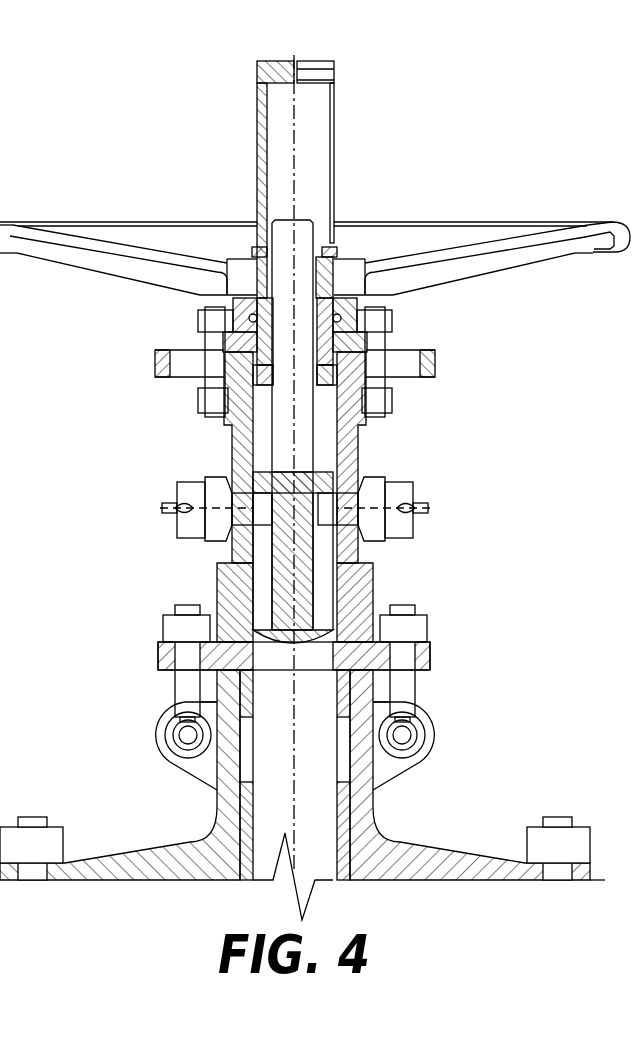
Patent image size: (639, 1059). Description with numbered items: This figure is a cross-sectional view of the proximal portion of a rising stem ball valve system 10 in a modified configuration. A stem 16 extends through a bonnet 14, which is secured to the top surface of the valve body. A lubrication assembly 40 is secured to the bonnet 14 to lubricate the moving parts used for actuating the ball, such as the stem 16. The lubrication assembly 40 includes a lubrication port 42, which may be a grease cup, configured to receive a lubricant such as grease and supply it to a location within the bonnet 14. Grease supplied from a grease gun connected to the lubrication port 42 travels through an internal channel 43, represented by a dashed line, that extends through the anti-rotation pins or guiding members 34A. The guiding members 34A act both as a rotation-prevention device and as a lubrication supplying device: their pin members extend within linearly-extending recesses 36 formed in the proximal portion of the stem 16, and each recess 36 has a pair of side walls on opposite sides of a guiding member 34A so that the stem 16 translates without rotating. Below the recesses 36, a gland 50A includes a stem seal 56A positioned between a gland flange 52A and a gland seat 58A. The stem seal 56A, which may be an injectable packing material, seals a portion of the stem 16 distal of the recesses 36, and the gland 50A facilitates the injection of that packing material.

The rising stem ball valve system 10 is at (129, 356).
The bonnet 14 is at (244, 445).
The stem 16 is at (314, 487).
The guiding members 34A is at (330, 503).
The recesses 36 is at (325, 563).
The lubrication assembly 40 is at (227, 498).
The lubrication port 42 is at (162, 507).
The internal channel 43 is at (202, 507).
The gland 50A is at (128, 611).
The gland flange 52A is at (247, 692).
The stem seal 56A is at (247, 725).
The gland seat 58A is at (243, 800).